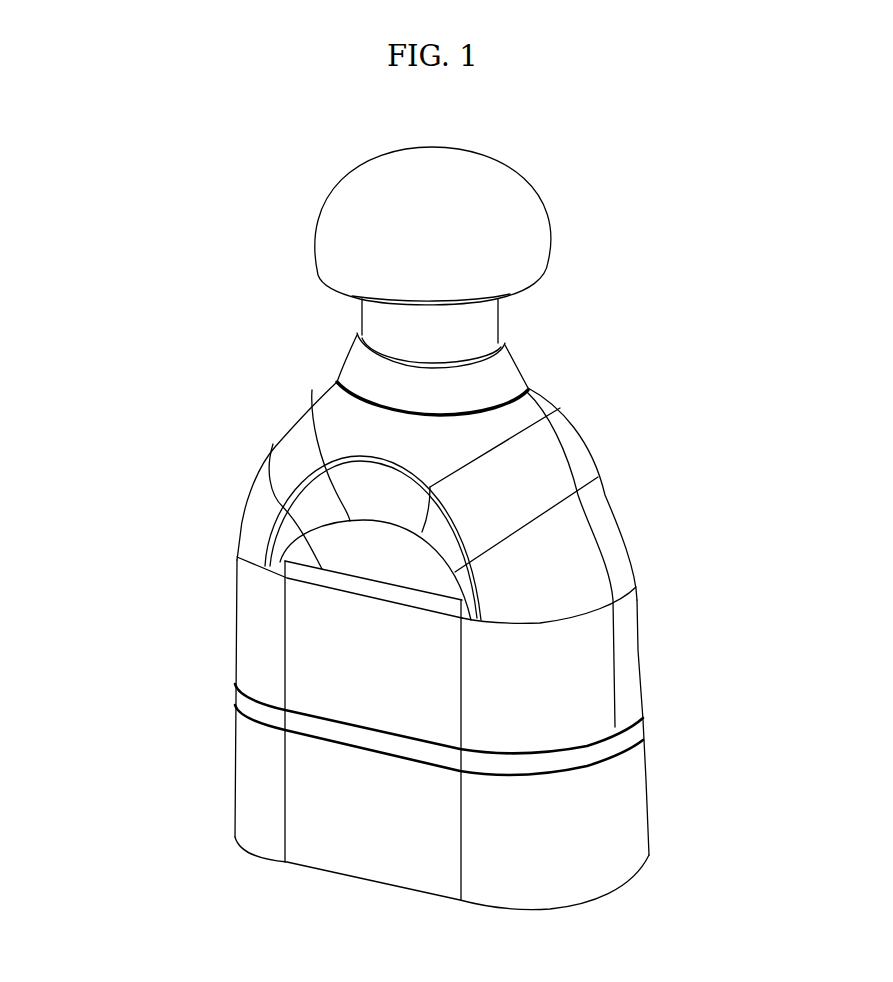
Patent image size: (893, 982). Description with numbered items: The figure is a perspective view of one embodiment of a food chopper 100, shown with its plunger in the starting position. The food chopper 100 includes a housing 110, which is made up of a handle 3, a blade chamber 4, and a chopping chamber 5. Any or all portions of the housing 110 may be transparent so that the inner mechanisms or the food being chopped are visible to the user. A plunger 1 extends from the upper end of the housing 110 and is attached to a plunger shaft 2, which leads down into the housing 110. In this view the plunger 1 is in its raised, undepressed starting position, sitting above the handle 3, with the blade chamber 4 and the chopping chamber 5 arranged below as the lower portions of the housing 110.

The food chopper 100 is at (40, 94).
The housing 110 is at (297, 418).
The plunger 1 is at (483, 203).
The plunger shaft 2 is at (490, 325).
The handle 3 is at (280, 533).
The blade chamber 4 is at (588, 678).
The chopping chamber 5 is at (253, 807).